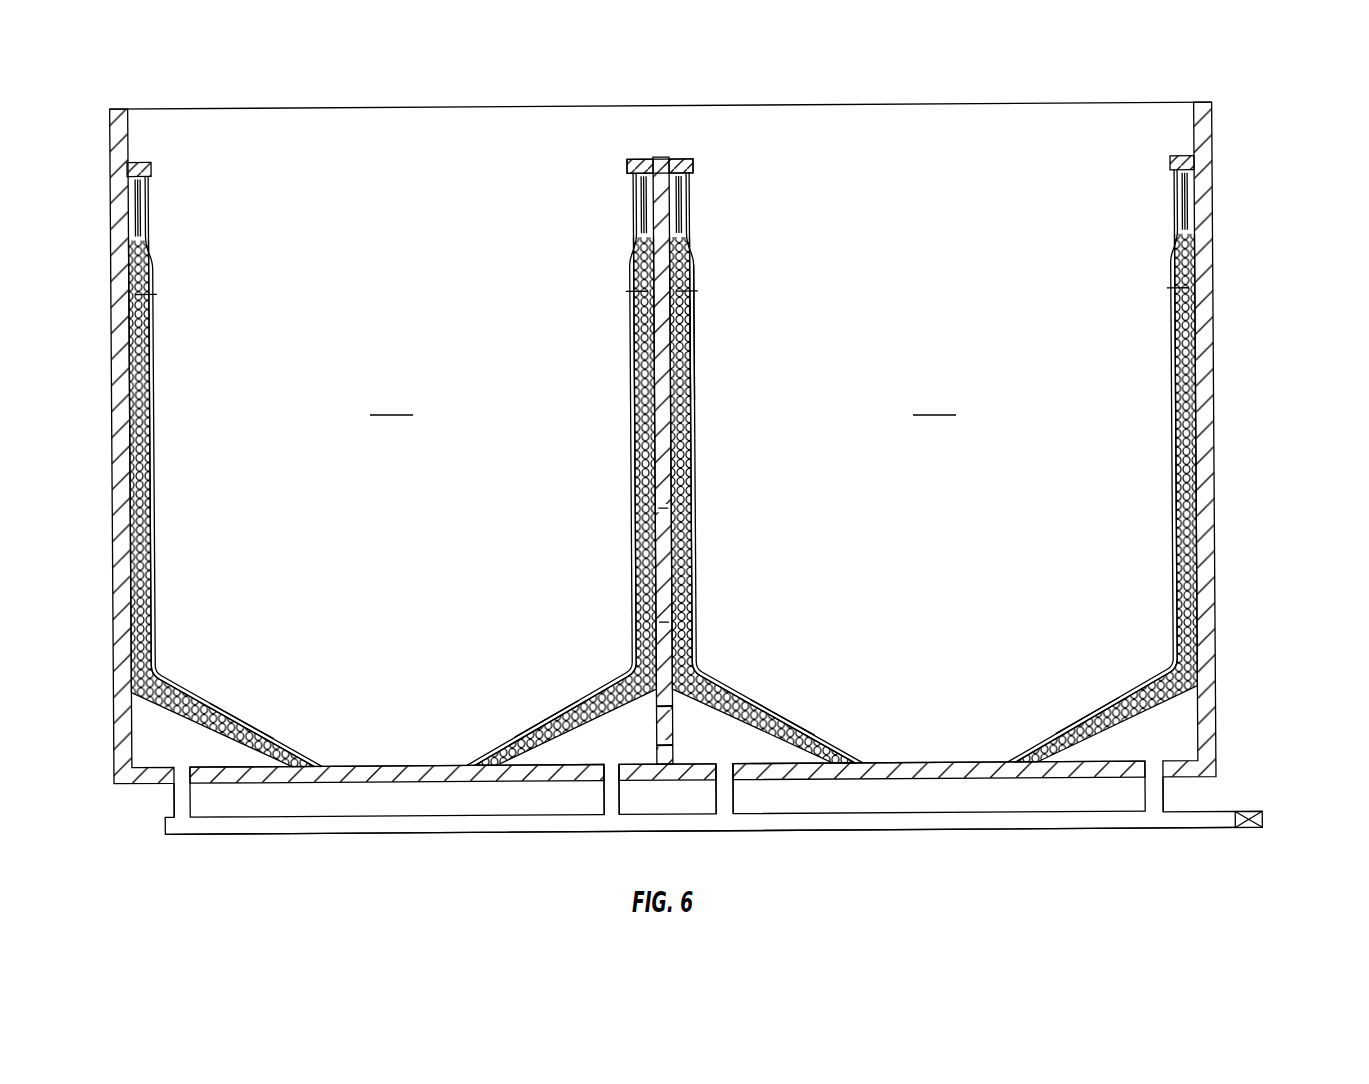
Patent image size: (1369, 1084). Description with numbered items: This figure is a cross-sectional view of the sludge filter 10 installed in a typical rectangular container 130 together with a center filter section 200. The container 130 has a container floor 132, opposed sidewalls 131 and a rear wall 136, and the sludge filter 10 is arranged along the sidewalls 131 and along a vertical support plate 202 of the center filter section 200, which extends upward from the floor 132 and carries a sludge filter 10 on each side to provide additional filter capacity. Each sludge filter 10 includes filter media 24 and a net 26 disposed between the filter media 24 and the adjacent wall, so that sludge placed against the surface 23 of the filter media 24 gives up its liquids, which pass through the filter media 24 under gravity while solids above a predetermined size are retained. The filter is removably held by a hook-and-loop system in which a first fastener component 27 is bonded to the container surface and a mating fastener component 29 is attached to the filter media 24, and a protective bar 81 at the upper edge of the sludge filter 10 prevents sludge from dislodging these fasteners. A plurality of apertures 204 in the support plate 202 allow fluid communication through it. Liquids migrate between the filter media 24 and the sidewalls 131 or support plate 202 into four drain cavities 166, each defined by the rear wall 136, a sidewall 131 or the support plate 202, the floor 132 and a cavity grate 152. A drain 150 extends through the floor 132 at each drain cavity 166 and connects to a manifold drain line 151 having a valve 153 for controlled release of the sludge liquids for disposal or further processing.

The sludge filter 10 is at (155, 268).
The surface of filter media 23 is at (157, 435).
The filter media 24 is at (691, 233).
The net 26 is at (690, 328).
The first fastener component 27 is at (643, 197).
The fastener component 29 is at (641, 202).
The protective bar 81 is at (628, 165).
The container 130 is at (938, 104).
The sidewall 131 is at (1216, 458).
The container floor 132 is at (936, 763).
The rear wall 136 is at (663, 400).
The drain 150 is at (1238, 862).
The manifold drain line 151 is at (903, 822).
The cavity grate 152 is at (188, 720).
The valve 153 is at (1262, 820).
The drain cavity 166 is at (152, 735).
The center filter section 200 is at (712, 186).
The vertical support plate 202 is at (660, 157).
The apertures 204 is at (657, 505).